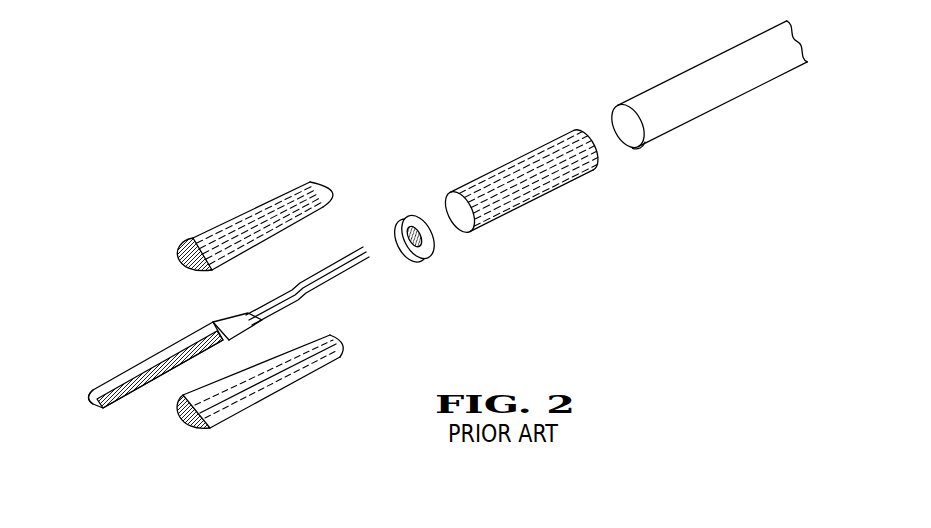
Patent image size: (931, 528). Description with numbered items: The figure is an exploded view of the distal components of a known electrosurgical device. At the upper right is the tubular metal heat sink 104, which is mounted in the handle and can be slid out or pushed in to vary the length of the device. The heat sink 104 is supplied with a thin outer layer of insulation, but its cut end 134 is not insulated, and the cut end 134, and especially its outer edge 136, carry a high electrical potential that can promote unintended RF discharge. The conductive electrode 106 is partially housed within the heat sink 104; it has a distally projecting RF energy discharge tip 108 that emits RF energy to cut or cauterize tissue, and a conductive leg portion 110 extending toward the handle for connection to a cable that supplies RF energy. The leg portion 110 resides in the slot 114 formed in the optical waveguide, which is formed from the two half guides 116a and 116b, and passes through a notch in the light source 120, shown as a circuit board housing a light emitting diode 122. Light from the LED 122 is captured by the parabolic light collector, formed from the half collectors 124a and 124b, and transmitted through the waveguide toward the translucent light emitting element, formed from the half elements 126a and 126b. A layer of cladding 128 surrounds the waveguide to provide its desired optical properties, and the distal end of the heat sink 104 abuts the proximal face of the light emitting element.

The tubular metal heat sink 104 is at (660, 83).
The conductive electrode 106 is at (168, 350).
The RF energy discharge tip 108 is at (90, 408).
The conductive leg portion 110 is at (355, 250).
The slot 114 is at (282, 353).
The half guide 116a is at (273, 238).
The half guide 116b is at (248, 407).
The light source 120 is at (423, 255).
The light emitting diode (LED) 122 is at (400, 243).
The half collector 124a is at (333, 182).
The half collector 124b is at (337, 340).
The half element 126a is at (187, 237).
The half element 126b is at (207, 433).
The cladding 128 is at (523, 207).
The cut end 134 is at (623, 150).
The outer edge 136 is at (618, 107).